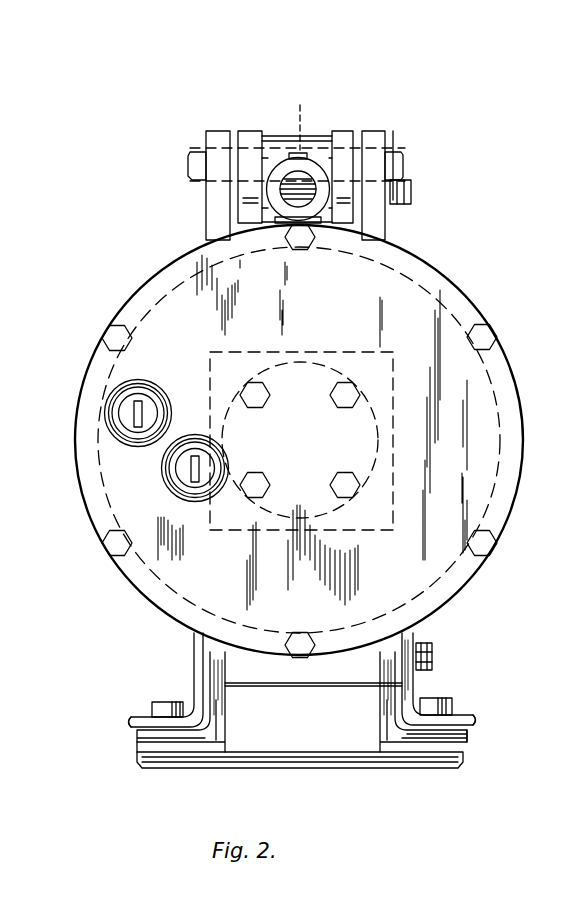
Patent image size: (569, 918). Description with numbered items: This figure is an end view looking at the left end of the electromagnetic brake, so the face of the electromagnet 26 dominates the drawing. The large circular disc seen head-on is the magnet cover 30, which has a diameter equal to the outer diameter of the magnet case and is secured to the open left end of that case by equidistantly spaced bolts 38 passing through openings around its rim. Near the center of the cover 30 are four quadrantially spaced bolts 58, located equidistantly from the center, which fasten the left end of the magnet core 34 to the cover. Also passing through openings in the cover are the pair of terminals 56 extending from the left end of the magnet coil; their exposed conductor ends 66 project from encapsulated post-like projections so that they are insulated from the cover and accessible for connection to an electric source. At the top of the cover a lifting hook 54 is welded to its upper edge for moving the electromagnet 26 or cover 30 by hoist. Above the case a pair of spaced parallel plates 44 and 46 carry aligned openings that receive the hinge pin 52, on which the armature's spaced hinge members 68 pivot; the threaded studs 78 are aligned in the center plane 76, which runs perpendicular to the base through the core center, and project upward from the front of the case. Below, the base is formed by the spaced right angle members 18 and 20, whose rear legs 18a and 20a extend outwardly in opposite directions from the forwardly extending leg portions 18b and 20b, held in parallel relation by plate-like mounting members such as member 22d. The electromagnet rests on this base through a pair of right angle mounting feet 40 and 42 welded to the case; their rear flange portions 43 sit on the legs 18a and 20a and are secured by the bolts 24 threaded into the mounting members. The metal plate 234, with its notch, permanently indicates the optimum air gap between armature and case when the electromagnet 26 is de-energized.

The right angle member 18 is at (214, 750).
The rear leg 18a is at (138, 752).
The forwardly extending leg portion 18b is at (222, 718).
The right angle member 20 is at (393, 744).
The rear leg 20a is at (470, 745).
The forwardly extending leg portion 20b is at (383, 712).
The plate-like mounting member 22d is at (458, 768).
The bolts 24 is at (165, 703).
The electromagnet 26 is at (468, 468).
The magnet cover 30 is at (184, 577).
The magnet core 34 is at (343, 352).
The bolts 38 is at (110, 338).
The right angle mounting foot 40 is at (194, 648).
The right angle mounting foot 42 is at (416, 684).
The rear flange portion 43 is at (128, 722).
The plate 44 is at (210, 221).
The plate 46 is at (380, 228).
The hinge pin 52 is at (400, 151).
The lifting hook 54 is at (292, 163).
The terminals 56 is at (193, 434).
The bolts 58 is at (258, 398).
The exposed conductor ends 66 is at (190, 472).
The hinge members 68 is at (246, 132).
The center plane 76 is at (300, 118).
The threaded studs 78 is at (298, 190).
The metal plate 234 is at (420, 648).